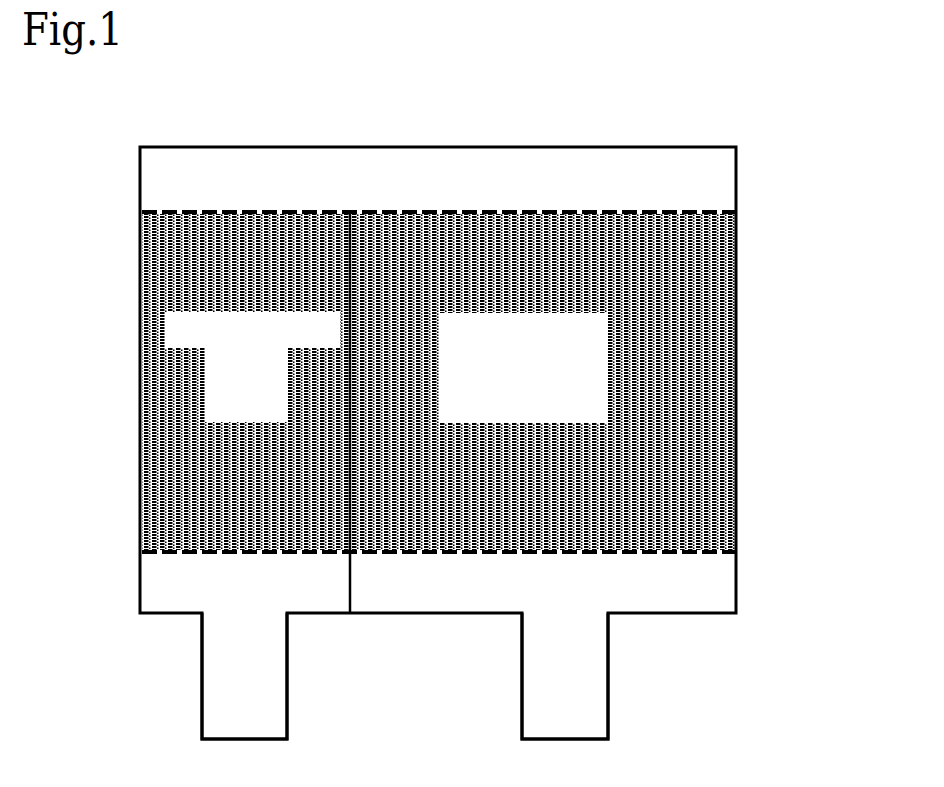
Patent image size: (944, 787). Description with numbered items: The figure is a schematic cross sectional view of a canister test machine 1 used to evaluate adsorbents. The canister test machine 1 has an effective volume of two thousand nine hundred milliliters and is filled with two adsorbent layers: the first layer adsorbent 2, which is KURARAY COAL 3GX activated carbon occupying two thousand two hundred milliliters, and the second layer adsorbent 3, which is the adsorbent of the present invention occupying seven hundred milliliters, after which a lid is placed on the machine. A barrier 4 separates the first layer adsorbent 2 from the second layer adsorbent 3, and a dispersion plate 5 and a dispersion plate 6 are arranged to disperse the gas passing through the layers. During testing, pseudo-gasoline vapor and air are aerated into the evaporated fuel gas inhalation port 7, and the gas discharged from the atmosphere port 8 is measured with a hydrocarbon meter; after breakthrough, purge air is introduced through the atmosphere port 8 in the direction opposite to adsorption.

The canister test machine 1 is at (736, 340).
The first layer adsorbent 2 is at (693, 490).
The second layer adsorbent 3 is at (170, 462).
The barrier 4 is at (350, 262).
The dispersion plate 5 is at (607, 212).
The dispersion plate 6 is at (447, 550).
The evaporated fuel gas inhalation port 7 is at (608, 705).
The atmosphere port 8 is at (202, 673).